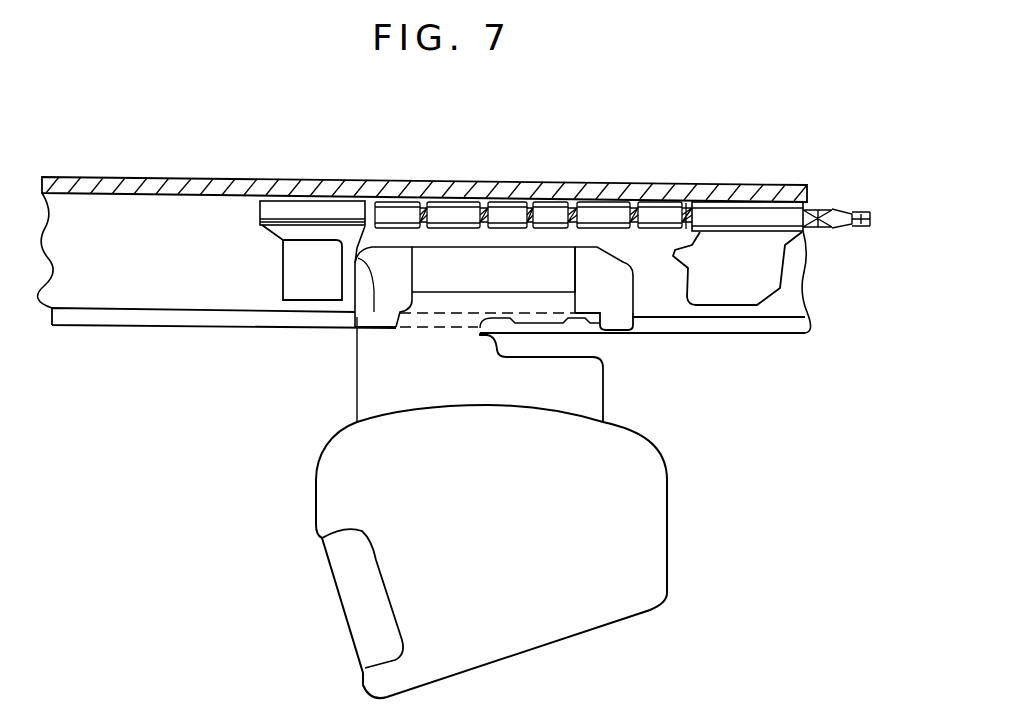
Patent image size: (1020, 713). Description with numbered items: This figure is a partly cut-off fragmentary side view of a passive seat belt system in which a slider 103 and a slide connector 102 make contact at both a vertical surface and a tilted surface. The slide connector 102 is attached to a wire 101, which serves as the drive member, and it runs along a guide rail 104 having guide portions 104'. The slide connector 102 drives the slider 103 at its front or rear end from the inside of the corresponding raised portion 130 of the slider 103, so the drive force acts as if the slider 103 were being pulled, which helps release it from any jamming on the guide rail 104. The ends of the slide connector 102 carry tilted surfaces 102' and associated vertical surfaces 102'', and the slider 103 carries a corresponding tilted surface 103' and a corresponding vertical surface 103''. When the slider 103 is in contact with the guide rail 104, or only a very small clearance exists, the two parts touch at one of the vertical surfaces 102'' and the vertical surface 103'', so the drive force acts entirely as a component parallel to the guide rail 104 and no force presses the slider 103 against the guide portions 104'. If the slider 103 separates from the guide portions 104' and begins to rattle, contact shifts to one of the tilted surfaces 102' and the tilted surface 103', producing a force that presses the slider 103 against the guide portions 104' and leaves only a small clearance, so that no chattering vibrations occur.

The wire 101 is at (823, 205).
The slide connector 102 is at (527, 179).
The tilted surface of slide connector 102' is at (462, 208).
The vertical surface of slide connector 102'' is at (566, 310).
The slider 103 is at (343, 343).
The tilted surface of slider 103' is at (504, 279).
The vertical surface of slider 103'' is at (511, 354).
The guide rail 104 is at (424, 277).
The guide portions of guide rail 104' is at (428, 348).
The raised portion of slider 130 is at (402, 313).